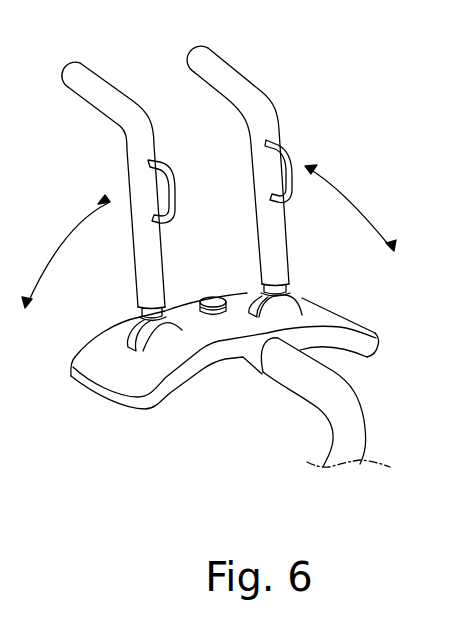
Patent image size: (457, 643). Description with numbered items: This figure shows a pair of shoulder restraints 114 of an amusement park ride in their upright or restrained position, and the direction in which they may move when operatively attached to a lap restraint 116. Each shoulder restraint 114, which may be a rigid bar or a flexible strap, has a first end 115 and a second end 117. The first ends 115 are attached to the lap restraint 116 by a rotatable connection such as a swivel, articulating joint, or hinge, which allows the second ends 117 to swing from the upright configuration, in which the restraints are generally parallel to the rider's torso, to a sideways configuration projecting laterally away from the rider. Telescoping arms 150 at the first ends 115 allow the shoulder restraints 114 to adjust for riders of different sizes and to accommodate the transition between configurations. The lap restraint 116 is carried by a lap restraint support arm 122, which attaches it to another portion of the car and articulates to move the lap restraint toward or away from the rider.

The shoulder restraints 114 is at (248, 85).
The first end 115 is at (257, 297).
The lap restraint 116 is at (250, 353).
The second end 117 is at (207, 47).
The lap restraint support arm 122 is at (359, 430).
The telescoping arms 150 is at (140, 311).